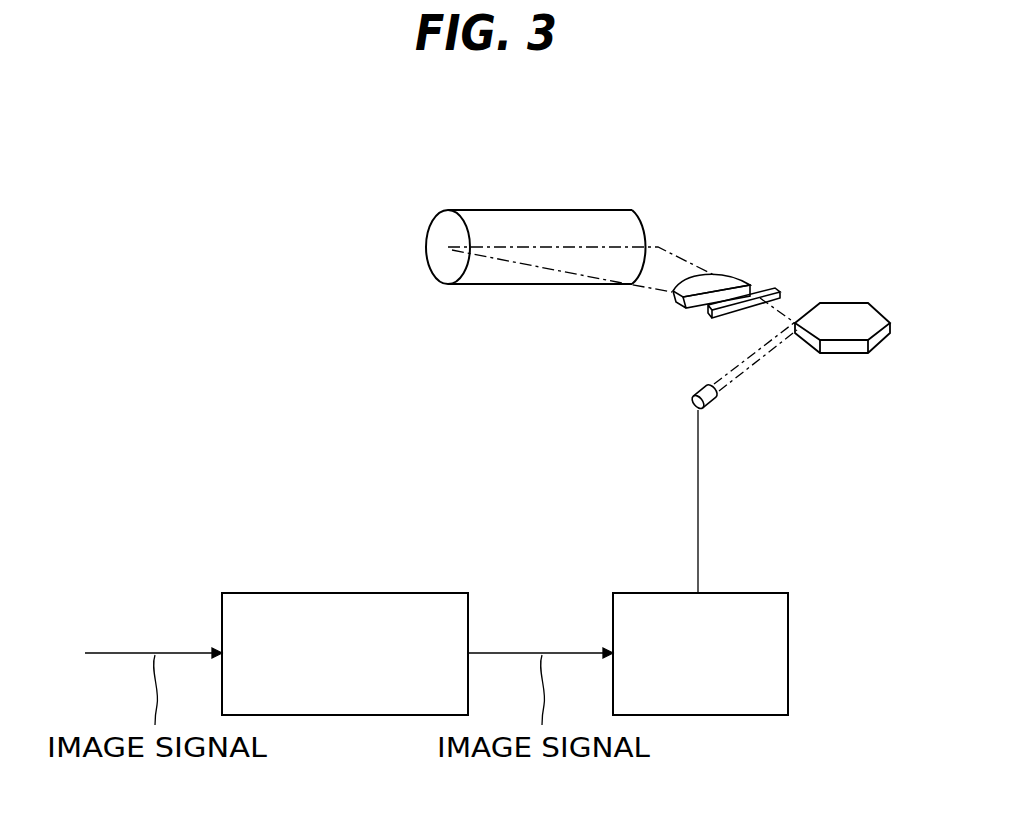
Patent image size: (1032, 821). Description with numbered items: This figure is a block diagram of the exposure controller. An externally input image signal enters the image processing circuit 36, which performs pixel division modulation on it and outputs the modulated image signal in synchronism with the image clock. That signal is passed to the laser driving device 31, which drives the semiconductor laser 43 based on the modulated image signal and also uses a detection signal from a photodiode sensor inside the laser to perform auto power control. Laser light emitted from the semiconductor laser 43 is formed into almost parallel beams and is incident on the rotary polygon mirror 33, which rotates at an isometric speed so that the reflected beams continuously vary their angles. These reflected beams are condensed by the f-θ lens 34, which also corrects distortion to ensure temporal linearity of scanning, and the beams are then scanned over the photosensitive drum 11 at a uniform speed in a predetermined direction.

The photosensitive drum 11 is at (550, 212).
The laser driving device 31 is at (727, 592).
The rotary polygon mirror 33 is at (850, 308).
The f-θ lens 34 is at (740, 275).
The image processing circuit 36 is at (350, 592).
The semiconductor laser 43 is at (718, 405).